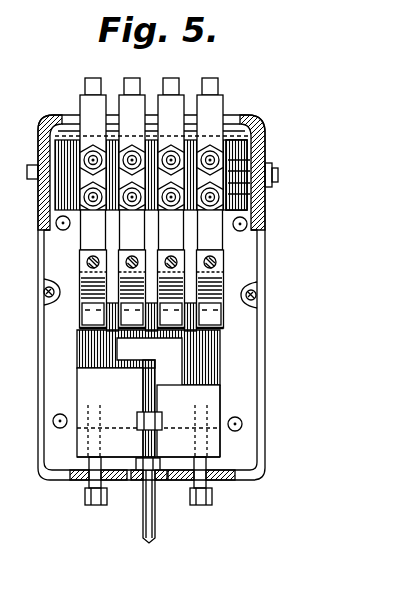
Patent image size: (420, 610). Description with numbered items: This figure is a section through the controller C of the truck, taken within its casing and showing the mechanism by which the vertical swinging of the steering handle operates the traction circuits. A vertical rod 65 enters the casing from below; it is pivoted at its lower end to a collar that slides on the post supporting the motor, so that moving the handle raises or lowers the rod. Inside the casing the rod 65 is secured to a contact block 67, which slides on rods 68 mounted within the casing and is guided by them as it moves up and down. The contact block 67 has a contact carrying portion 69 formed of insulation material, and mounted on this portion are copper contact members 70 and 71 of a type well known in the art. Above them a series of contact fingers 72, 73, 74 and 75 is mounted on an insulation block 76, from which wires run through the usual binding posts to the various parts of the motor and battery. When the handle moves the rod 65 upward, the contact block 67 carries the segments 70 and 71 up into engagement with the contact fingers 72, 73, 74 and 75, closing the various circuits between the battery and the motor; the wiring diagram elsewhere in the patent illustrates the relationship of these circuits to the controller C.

The controller C is at (246, 128).
The insulation block 76 is at (238, 162).
The contact finger 72 is at (85, 276).
The contact finger 73 is at (125, 290).
The contact finger 74 is at (175, 290).
The contact finger 75 is at (222, 307).
The contact carrying portion 69 is at (210, 355).
The contact block 67 is at (222, 397).
The copper contact member 71 is at (129, 410).
The copper contact member 70 is at (189, 410).
The rods 68 is at (80, 472).
The vertical rod 65 is at (156, 528).